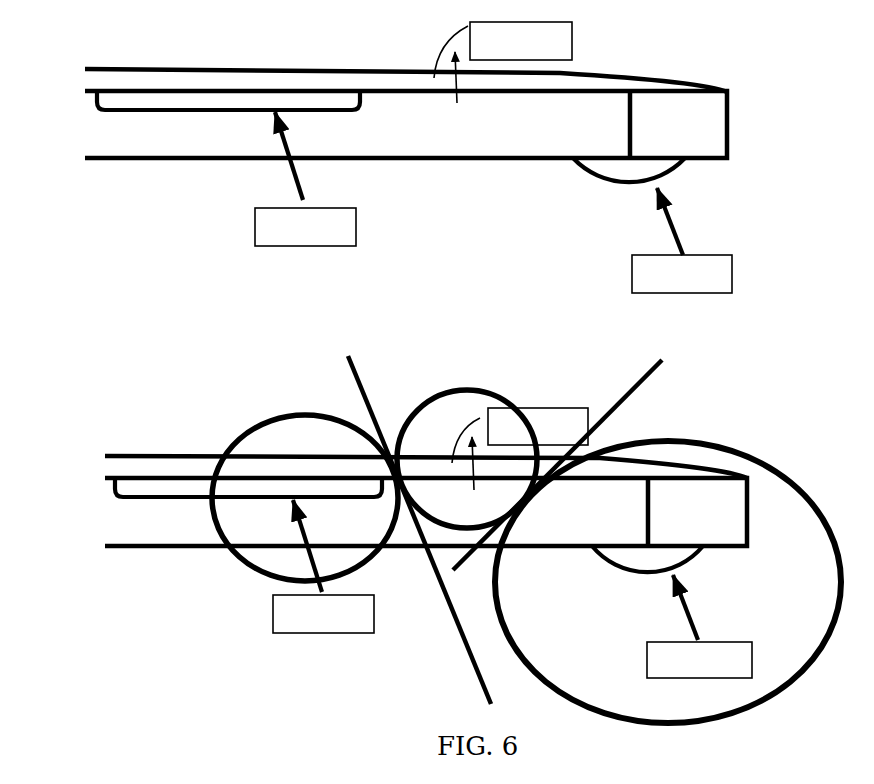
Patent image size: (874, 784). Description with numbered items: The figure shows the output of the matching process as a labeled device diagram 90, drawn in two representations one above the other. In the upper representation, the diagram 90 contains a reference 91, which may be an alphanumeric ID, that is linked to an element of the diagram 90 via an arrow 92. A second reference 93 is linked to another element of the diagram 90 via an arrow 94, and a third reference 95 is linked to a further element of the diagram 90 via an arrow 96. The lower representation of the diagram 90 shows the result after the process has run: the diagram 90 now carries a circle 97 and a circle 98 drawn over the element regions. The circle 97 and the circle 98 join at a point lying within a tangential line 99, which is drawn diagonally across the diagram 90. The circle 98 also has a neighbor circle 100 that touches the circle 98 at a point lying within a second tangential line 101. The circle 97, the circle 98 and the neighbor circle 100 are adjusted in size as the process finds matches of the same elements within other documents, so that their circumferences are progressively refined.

The labeled device diagram 90 is at (97, 130).
The reference 91 is at (240, 230).
The arrow 92 is at (268, 133).
The second reference 93 is at (458, 29).
The arrow 94 is at (461, 272).
The third reference 95 is at (615, 283).
The arrow 96 is at (650, 235).
The circle 97 is at (238, 425).
The circle 98 is at (428, 390).
The tangential line 99 is at (342, 383).
The neighbor circle 100 is at (786, 438).
The tangential line 101 is at (608, 388).